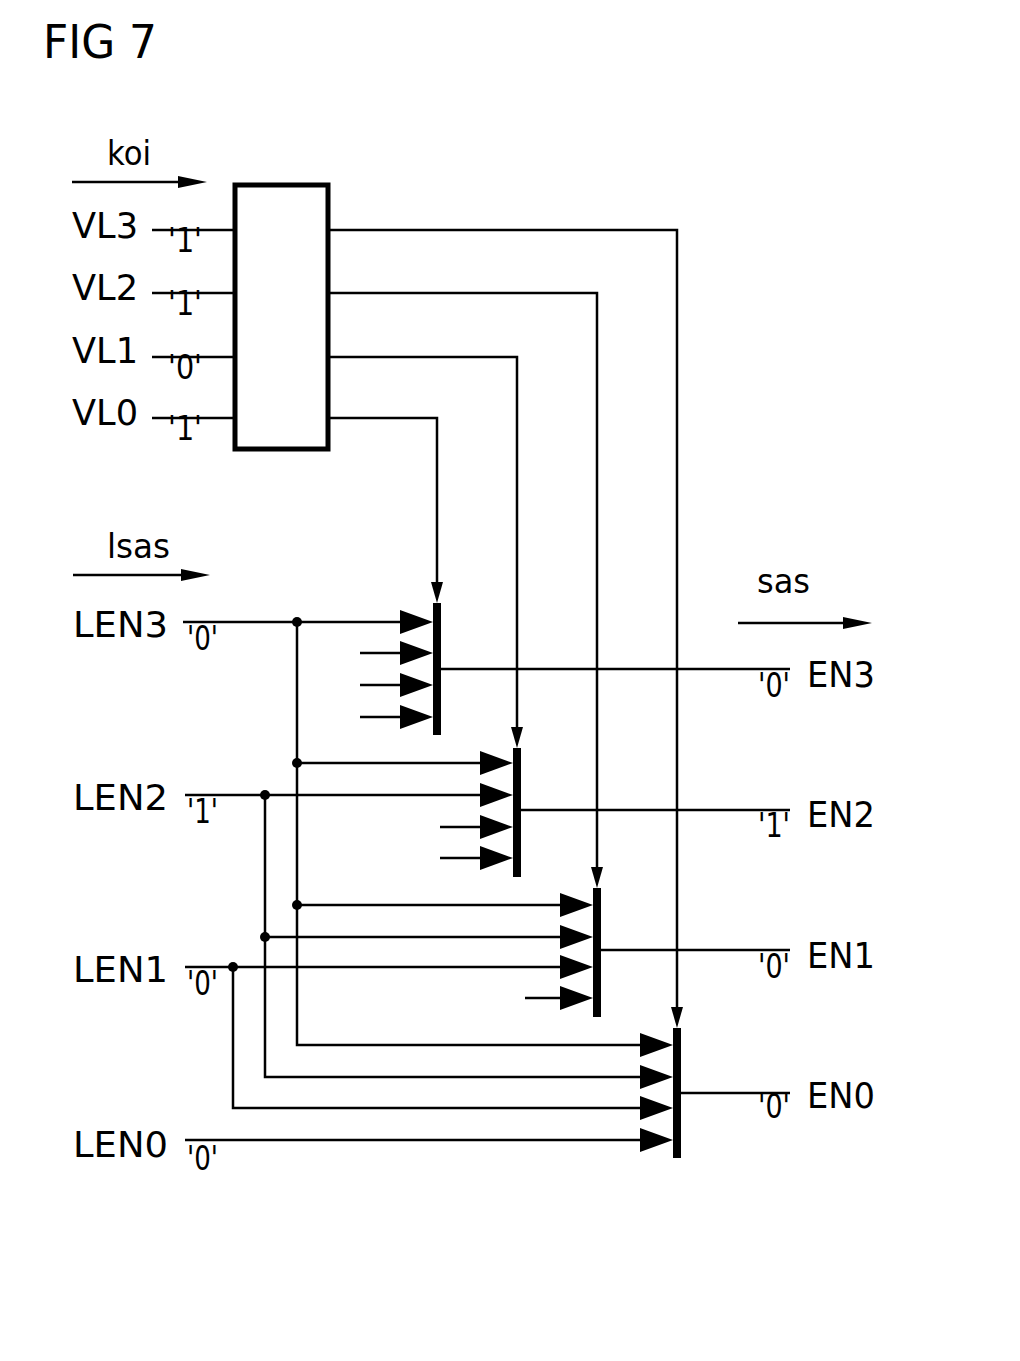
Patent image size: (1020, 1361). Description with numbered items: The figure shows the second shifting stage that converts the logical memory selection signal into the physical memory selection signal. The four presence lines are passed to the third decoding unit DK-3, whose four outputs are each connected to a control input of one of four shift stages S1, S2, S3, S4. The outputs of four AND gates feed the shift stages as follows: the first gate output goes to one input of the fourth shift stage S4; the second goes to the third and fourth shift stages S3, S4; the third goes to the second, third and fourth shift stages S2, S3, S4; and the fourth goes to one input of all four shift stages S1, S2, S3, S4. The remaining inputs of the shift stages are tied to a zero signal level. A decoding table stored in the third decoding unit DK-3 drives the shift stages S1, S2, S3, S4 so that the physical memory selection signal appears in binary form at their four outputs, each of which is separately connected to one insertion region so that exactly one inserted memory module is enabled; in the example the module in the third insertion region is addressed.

The third decoding unit DK-3 is at (247, 183).
The first shift stage S1 is at (442, 690).
The second shift stage S2 is at (522, 830).
The third shift stage S3 is at (602, 972).
The fourth shift stage S4 is at (682, 1114).